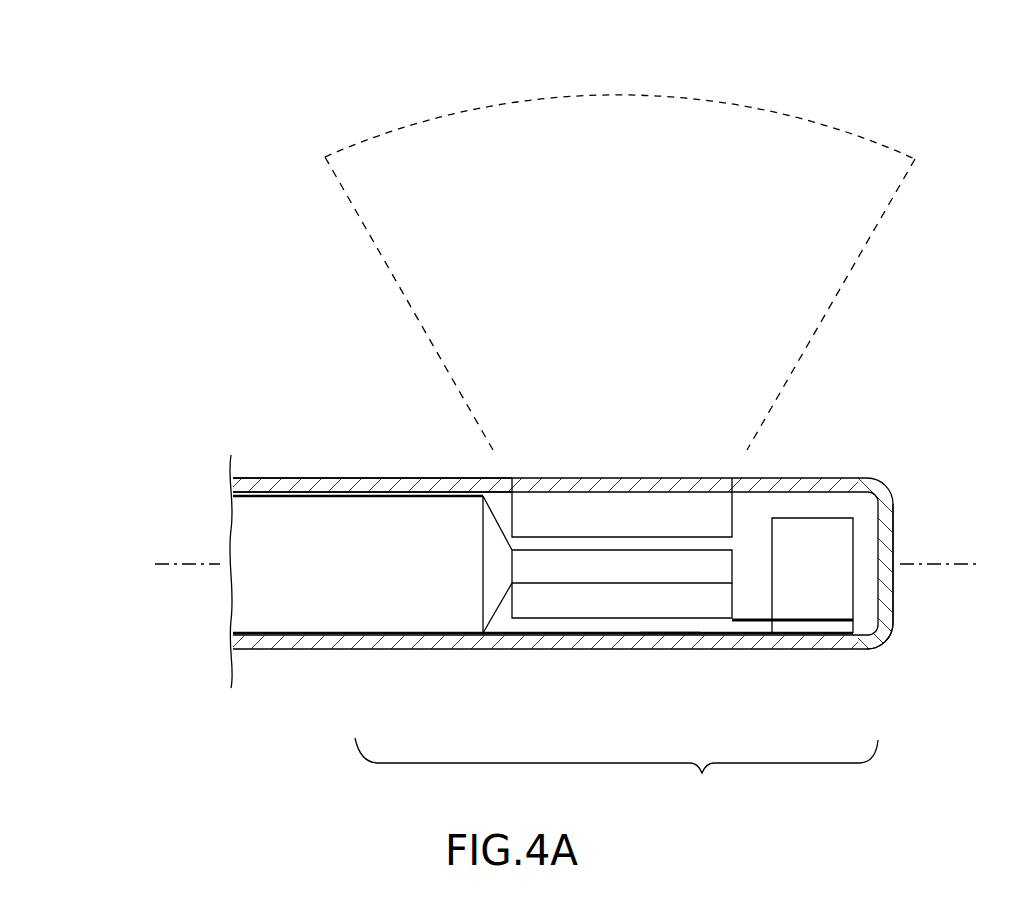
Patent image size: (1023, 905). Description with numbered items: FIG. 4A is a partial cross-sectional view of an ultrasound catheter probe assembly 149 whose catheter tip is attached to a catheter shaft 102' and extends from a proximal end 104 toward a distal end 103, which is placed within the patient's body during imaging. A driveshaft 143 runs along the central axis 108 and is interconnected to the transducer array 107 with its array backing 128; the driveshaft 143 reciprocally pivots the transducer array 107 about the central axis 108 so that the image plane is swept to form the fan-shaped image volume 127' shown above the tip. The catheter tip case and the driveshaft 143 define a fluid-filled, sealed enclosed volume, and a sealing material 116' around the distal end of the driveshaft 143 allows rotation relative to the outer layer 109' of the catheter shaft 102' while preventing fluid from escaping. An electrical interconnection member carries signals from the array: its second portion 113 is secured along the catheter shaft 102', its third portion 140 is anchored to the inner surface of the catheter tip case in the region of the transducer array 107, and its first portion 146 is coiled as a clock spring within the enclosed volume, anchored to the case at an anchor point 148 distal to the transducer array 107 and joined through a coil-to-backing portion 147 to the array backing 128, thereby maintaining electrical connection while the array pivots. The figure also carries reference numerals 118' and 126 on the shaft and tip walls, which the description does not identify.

The catheter shaft 102' is at (246, 617).
The distal end 103 is at (922, 588).
The proximal end 104 is at (338, 440).
The transducer array 107 is at (680, 550).
The central axis 108 is at (957, 563).
The outer layer 109' is at (358, 452).
The second portion 113 is at (327, 490).
The sealing material 116' is at (503, 619).
The inner tube wall 118' is at (358, 663).
The outer tube 126 is at (606, 478).
The image volume 127' is at (388, 303).
The array backing 128 is at (606, 620).
The third portion 140 is at (677, 630).
The driveshaft 143 is at (492, 612).
The first portion 146 is at (830, 518).
The coil-to-backing portion 147 is at (755, 622).
The anchor point 148 is at (842, 650).
The ultrasound catheter probe assembly 149 is at (247, 183).